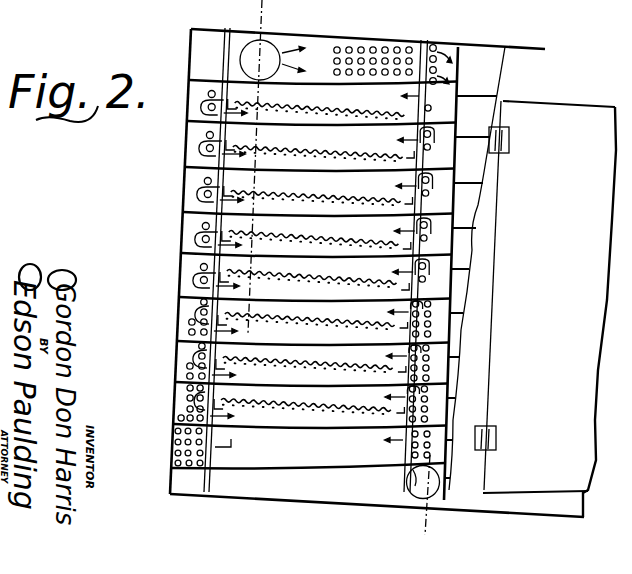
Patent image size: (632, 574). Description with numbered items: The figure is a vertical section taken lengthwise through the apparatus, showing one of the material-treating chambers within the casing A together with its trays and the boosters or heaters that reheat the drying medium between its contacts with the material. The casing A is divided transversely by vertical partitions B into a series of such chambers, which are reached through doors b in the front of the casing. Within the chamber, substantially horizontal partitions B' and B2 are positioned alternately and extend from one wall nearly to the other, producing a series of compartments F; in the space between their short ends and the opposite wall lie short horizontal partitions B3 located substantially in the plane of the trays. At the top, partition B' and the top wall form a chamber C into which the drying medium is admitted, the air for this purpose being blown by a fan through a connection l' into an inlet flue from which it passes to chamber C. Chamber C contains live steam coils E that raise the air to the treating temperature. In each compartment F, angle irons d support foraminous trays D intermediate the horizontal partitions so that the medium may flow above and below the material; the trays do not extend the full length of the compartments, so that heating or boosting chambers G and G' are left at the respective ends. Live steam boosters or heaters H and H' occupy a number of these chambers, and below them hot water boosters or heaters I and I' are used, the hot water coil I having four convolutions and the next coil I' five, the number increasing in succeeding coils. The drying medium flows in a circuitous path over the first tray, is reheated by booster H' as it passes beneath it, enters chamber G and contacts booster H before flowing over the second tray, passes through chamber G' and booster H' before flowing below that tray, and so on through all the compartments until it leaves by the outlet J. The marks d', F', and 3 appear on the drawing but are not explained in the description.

The casing A is at (545, 52).
The vertical partition B is at (456, 367).
The horizontal partition B' is at (180, 257).
The horizontal partition B2 is at (198, 150).
The short horizontal partition B3 is at (440, 127).
The door b is at (545, 309).
The chamber C is at (258, 41).
The tray D is at (238, 116).
The angle iron d is at (277, 260).
The bracket d' is at (241, 453).
The live steam coil E is at (340, 45).
The compartment F is at (313, 284).
The return passage F' is at (385, 98).
The heating or boosting chamber G is at (468, 165).
The heating or boosting chamber G' is at (182, 243).
The booster or heater H is at (466, 254).
The booster or heater H' is at (183, 172).
The hot water booster or heater I is at (455, 322).
The hot water booster or heater I' is at (176, 403).
The outlet J is at (420, 493).
The connection l' is at (419, 55).
The section line 3 is at (416, 511).